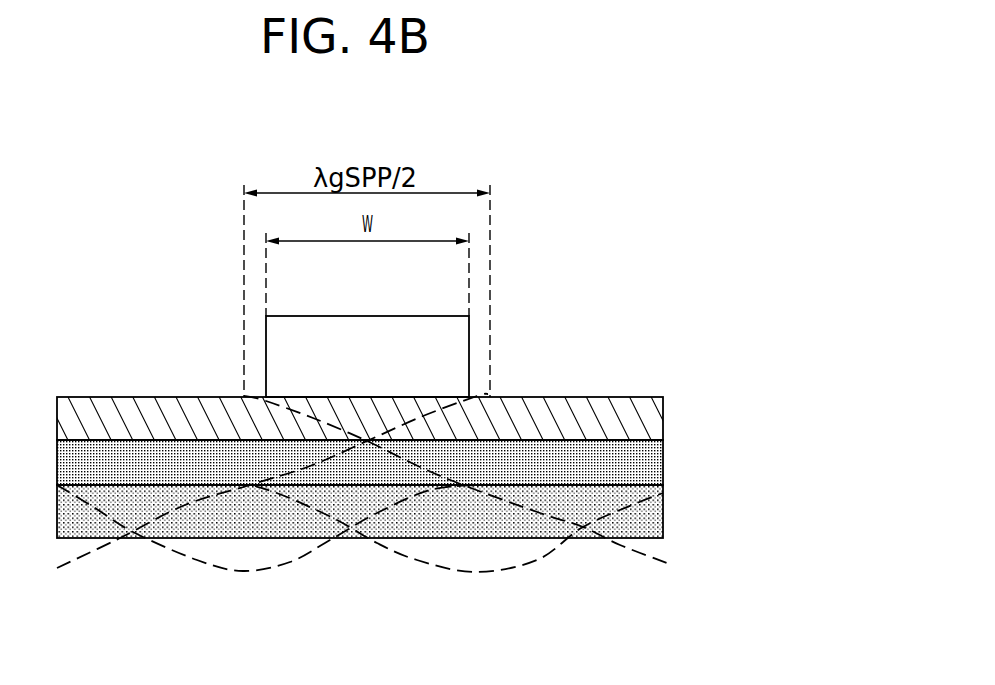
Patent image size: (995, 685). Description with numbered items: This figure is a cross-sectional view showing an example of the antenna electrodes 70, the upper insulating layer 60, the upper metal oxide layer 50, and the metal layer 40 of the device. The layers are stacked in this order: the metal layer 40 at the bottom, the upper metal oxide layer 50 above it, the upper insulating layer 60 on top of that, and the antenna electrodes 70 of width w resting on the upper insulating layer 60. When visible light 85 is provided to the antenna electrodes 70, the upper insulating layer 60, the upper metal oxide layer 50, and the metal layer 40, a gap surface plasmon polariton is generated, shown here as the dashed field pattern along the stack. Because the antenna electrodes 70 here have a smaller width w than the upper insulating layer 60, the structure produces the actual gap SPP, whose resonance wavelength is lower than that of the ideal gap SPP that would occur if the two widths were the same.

The metal layer 40 is at (652, 520).
The upper metal oxide layer 50 is at (650, 467).
The upper insulating layer 60 is at (645, 420).
The antenna electrodes 70 is at (450, 360).
The visible light 85 is at (163, 508).